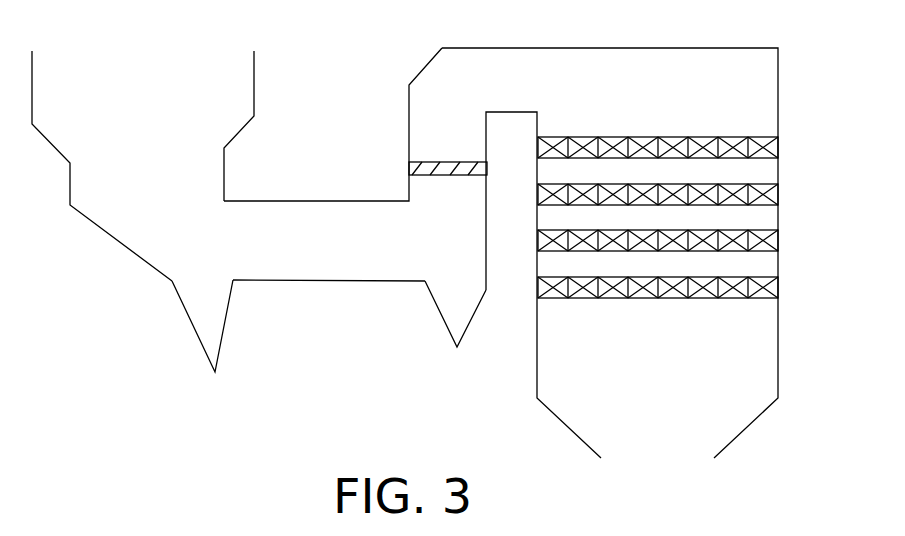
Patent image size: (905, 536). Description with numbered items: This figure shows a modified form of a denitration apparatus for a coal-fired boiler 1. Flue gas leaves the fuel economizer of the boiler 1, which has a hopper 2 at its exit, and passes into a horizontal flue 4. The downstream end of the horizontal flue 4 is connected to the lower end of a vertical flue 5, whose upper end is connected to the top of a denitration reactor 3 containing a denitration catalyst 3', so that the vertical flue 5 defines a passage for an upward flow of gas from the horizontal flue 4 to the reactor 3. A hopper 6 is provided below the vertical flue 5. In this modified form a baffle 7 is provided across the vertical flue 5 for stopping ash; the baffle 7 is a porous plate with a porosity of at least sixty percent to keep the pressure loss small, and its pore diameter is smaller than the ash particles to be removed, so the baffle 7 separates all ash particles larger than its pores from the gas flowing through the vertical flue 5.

The boiler 1 is at (151, 97).
The hopper 2 is at (187, 314).
The denitration reactor 3 is at (610, 253).
The denitration catalyst 3' is at (687, 217).
The horizontal flue 4 is at (317, 282).
The vertical flue 5 is at (408, 128).
The hopper 6 is at (473, 317).
The baffle 7 is at (467, 160).